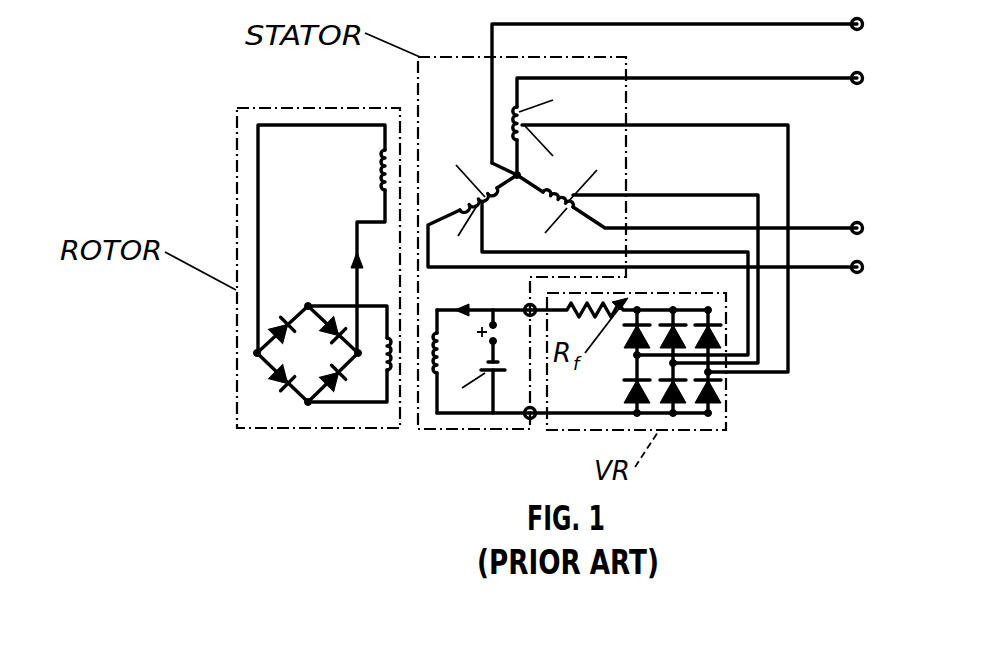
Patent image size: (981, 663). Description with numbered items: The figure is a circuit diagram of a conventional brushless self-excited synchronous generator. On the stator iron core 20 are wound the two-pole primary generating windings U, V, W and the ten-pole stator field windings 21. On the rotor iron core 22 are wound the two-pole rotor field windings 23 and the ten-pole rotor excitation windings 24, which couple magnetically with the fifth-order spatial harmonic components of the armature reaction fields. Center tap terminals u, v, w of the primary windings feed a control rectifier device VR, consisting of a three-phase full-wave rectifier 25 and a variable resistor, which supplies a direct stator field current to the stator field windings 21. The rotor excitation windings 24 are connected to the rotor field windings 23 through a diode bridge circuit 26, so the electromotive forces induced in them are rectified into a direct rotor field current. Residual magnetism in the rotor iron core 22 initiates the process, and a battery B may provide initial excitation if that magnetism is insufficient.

The stator iron core 20 is at (437, 57).
The stator field windings 21 is at (432, 375).
The rotor iron core 22 is at (256, 106).
The rotor field windings 23 is at (381, 176).
The rotor excitation windings 24 is at (380, 373).
The three-phase full-wave rectifier 25 is at (712, 385).
The diode bridge circuit 26 is at (292, 387).